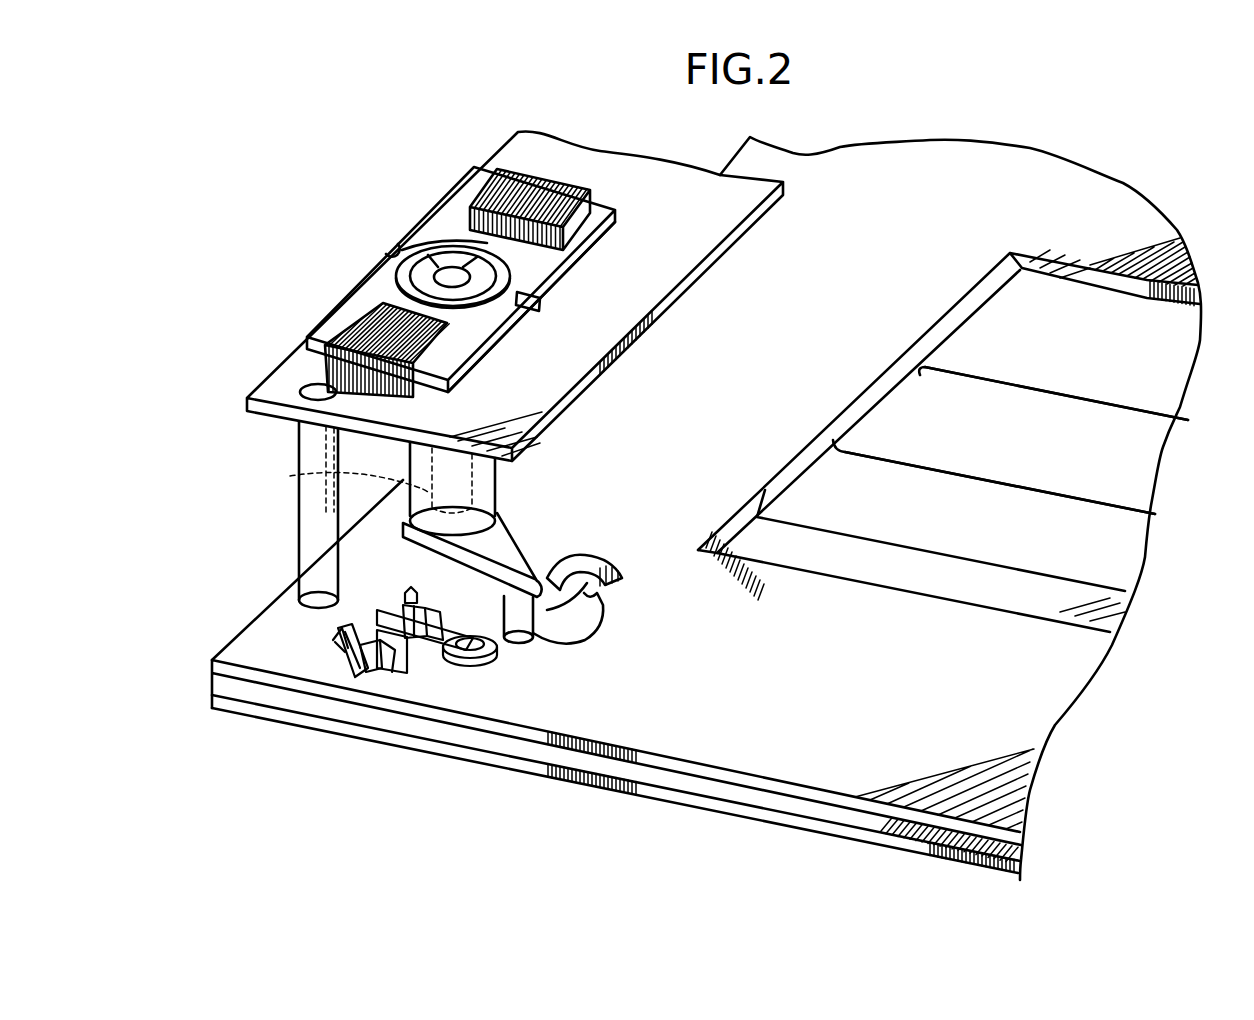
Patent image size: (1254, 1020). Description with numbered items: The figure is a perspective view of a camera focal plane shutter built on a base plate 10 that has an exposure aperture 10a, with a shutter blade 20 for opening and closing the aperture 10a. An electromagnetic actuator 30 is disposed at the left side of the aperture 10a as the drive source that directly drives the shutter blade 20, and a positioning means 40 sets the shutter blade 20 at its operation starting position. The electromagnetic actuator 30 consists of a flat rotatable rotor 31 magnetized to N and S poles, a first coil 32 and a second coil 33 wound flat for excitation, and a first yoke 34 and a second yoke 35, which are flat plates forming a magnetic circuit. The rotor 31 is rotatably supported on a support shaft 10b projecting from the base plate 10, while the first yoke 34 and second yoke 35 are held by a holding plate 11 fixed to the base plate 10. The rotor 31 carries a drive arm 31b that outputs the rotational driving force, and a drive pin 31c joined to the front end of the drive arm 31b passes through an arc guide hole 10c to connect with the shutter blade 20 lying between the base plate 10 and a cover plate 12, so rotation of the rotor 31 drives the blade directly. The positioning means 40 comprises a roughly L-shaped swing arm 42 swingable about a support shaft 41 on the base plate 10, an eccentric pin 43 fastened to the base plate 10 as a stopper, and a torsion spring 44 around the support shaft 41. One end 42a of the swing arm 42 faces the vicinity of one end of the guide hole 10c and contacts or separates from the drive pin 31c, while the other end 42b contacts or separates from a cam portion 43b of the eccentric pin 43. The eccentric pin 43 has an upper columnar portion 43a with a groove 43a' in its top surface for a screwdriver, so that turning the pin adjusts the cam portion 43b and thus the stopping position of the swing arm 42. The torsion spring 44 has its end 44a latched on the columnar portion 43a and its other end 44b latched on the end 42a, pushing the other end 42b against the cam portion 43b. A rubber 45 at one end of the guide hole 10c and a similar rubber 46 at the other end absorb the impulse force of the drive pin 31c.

The base plate 10 is at (838, 160).
The exposure aperture 10a is at (1039, 253).
The support shaft 10b is at (290, 476).
The arc guide hole 10c is at (592, 597).
The holding plate 11 is at (700, 232).
The cover plate 12 is at (730, 816).
The shutter blade 20 is at (1145, 448).
The electromagnetic actuator 30 is at (452, 246).
The rotor 31 is at (420, 258).
The drive arm 31b is at (500, 540).
The drive pin 31c is at (565, 632).
The first coil 32 is at (523, 170).
The second coil 33 is at (338, 308).
The first yoke 34 is at (457, 202).
The second yoke 35 is at (597, 217).
The positioning means 40 is at (375, 694).
The support shaft 41 is at (413, 585).
The swing arm 42 is at (372, 712).
The one end of swing arm 42a is at (470, 660).
The other end of swing arm 42b is at (372, 657).
The eccentric pin 43 is at (287, 721).
The columnar portion 43a is at (265, 686).
The groove 43a' is at (262, 632).
The cam portion 43b is at (395, 655).
The torsion spring 44 is at (391, 710).
The end of torsion spring 44a is at (373, 690).
The other end of torsion spring 44b is at (427, 645).
The rubber 45 is at (500, 655).
The rubber 46 is at (603, 560).